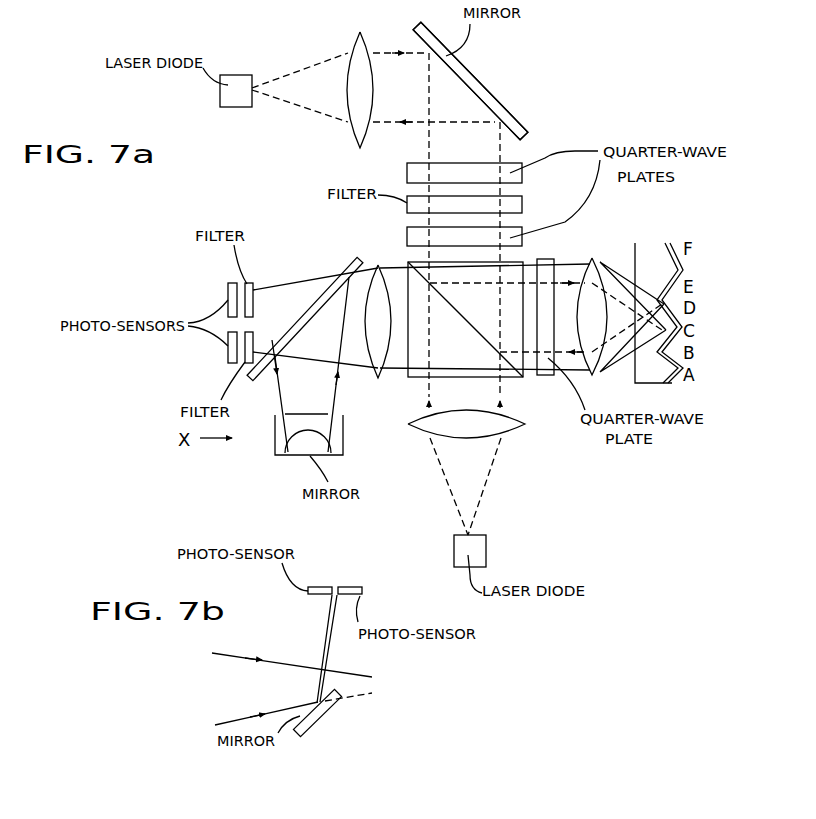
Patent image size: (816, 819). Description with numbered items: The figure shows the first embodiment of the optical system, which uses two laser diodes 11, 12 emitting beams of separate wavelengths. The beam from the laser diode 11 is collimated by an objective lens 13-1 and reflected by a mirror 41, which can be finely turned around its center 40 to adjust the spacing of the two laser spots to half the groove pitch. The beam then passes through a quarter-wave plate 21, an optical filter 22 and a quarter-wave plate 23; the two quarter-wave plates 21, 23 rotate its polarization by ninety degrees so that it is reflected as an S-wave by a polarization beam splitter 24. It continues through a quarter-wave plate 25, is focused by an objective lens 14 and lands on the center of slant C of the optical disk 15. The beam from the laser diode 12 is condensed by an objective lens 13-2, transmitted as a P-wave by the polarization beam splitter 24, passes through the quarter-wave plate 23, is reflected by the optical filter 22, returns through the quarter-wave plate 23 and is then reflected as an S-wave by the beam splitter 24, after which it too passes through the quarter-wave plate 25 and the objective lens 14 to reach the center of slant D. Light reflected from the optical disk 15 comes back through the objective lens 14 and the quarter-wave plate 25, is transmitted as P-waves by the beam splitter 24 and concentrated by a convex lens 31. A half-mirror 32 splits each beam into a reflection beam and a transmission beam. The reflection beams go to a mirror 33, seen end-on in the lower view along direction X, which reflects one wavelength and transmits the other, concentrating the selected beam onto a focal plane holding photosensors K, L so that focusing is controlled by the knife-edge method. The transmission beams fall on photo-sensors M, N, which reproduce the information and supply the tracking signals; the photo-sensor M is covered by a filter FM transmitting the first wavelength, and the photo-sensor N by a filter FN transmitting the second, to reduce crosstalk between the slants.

In FIG. 7a, the laser diode 11 is at (233, 76).
In FIG. 7a, the laser diode 12 is at (487, 551).
In FIG. 7a, the objective lens 13-1 is at (355, 130).
In FIG. 7a, the objective lens 13-2 is at (505, 436).
In FIG. 7a, the objective lens 14 is at (593, 376).
In FIG. 7a, the optical disk 15 is at (663, 249).
In FIG. 7a, the quarter-wave plate 21 is at (523, 174).
In FIG. 7a, the optical filter 22 is at (523, 206).
In FIG. 7a, the quarter-wave plate 23 is at (523, 238).
In FIG. 7a, the polarization beam splitter 24 is at (423, 378).
In FIG. 7a, the quarter-wave plate 25 is at (553, 376).
In FIG. 7a, the convex lens 31 is at (375, 377).
In FIG. 7a, the half-mirror 32 is at (352, 268).
In FIG. 7a, the mirror 33 is at (343, 443).
In FIG. 7b, the mirror 33 is at (323, 721).
In FIG. 7a, the center of mirror 40 is at (476, 75).
In FIG. 7a, the mirror 41 is at (521, 126).
In FIG. 7a, the photo-sensor M is at (220, 300).
In FIG. 7a, the photo-sensor N is at (220, 347).
In FIG. 7a, the filter FM is at (256, 289).
In FIG. 7a, the filter FN is at (250, 346).
In FIG. 7b, the photosensor L is at (320, 580).
In FIG. 7b, the photosensor K is at (350, 580).